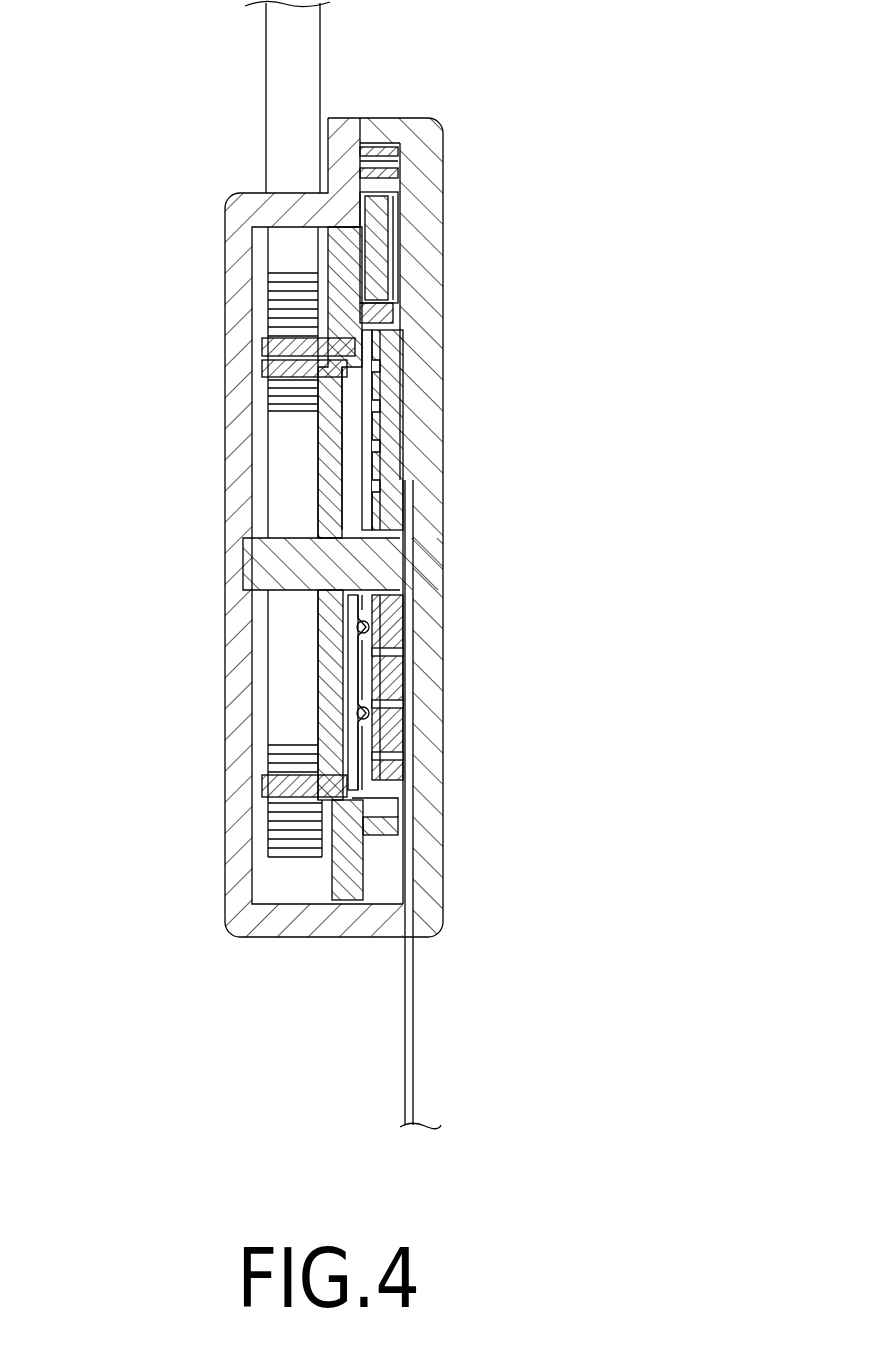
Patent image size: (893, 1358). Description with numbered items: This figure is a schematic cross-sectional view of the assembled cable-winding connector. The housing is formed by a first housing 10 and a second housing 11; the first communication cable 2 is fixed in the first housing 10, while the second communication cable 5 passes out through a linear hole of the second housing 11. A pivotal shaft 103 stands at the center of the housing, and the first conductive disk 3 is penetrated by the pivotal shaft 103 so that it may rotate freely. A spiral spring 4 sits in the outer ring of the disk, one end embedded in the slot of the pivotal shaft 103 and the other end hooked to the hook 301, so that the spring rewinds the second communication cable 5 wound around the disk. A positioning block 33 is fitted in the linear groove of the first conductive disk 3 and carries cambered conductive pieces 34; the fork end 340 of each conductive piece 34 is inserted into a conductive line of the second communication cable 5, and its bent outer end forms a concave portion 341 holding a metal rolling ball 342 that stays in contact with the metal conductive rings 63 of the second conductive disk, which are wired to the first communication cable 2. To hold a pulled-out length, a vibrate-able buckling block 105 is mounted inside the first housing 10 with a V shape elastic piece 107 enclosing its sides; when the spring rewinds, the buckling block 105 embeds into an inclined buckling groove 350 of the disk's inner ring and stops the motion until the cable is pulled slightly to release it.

The first communication cable 2 is at (405, 1003).
The first conductive disk 3 is at (336, 452).
The spiral spring 4 is at (284, 497).
The second communication cable 5 is at (286, 100).
The first housing 10 is at (405, 130).
The second housing 11 is at (236, 252).
The positioning block 33 is at (331, 658).
The conductive piece 34 is at (362, 660).
The metal conductive ring 63 is at (377, 510).
The pivotal shaft 103 is at (256, 567).
The buckling block 105 is at (399, 260).
The V shape elastic piece 107 is at (403, 143).
The hook 301 is at (268, 373).
The fork end 340 is at (352, 683).
The concave portion 341 is at (364, 592).
The metal rolling ball 342 is at (369, 627).
The inclined buckling groove 350 is at (395, 300).